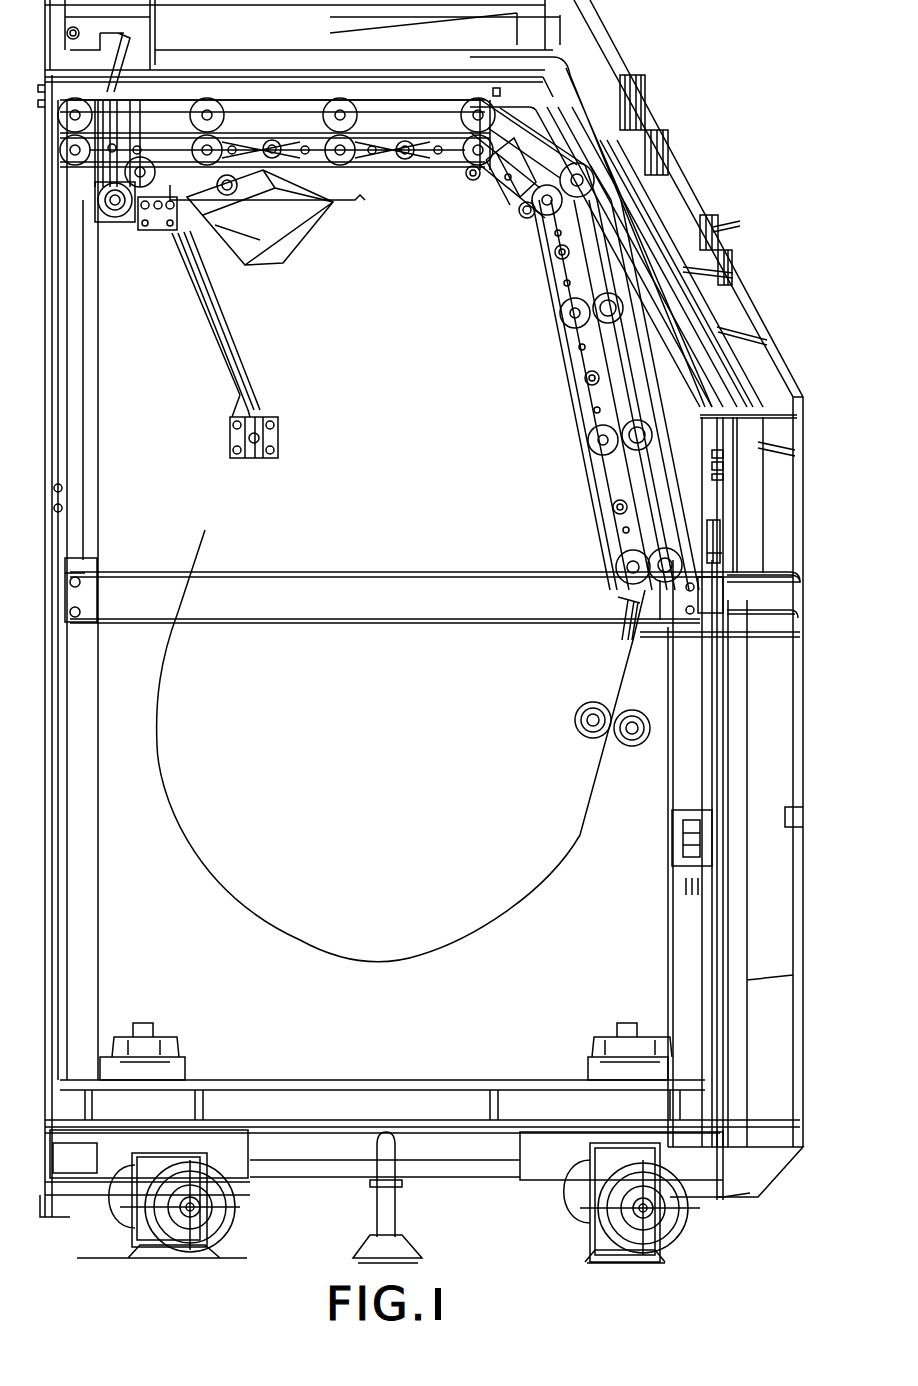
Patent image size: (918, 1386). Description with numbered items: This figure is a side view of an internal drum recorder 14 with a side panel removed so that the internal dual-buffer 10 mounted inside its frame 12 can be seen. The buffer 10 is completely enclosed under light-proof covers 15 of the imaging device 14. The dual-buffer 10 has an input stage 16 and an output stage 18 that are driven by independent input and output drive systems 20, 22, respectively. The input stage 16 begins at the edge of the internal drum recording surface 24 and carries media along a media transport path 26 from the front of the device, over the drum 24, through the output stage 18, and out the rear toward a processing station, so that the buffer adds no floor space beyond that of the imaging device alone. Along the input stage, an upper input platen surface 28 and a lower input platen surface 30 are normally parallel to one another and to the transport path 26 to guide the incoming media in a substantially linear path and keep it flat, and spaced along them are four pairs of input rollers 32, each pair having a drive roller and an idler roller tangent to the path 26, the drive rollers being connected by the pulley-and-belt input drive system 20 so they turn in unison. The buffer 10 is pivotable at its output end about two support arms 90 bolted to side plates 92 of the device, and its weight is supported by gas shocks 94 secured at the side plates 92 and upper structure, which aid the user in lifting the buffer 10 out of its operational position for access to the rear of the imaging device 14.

The internal dual-buffer 10 is at (429, 253).
The frame 12 is at (45, 275).
The internal drum recorder 14 is at (683, 38).
The light-proof covers 15 is at (715, 230).
The input stage 16 is at (502, 230).
The output stage 18 is at (276, 165).
The input drive system 20 is at (597, 387).
The output drive system 22 is at (375, 160).
The internal drum recording surface 24 is at (580, 837).
The media transport path 26 is at (598, 365).
The upper input platen surface 28 is at (583, 273).
The lower input platen surface 30 is at (597, 363).
The input rollers 32 is at (515, 200).
The support arms 90 is at (262, 233).
The side plates 92 is at (117, 355).
The gas shocks 94 is at (227, 340).